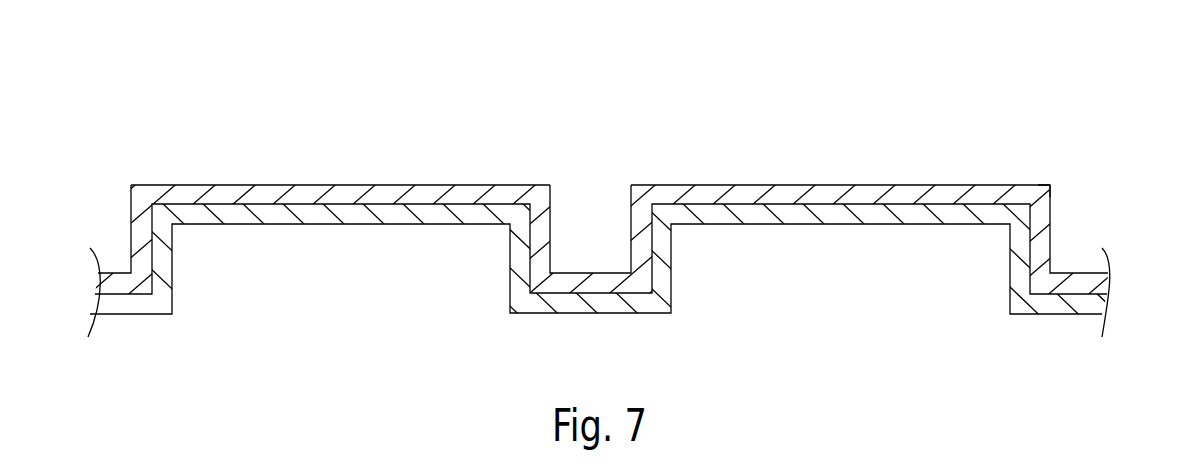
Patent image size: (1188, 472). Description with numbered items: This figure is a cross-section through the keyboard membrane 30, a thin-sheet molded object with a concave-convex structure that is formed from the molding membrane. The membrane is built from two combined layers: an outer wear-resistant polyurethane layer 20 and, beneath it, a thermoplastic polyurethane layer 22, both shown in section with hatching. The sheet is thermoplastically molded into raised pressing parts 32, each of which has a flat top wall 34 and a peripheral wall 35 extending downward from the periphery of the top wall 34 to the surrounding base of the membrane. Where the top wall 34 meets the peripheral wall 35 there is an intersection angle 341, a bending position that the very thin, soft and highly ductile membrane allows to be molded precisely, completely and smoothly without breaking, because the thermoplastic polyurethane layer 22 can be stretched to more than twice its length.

The wear-resistant polyurethane layer 20 is at (784, 192).
The thermoplastic polyurethane layer 22 is at (835, 217).
The keyboard membrane 30 is at (867, 160).
The pressing part 32 is at (175, 72).
The top wall 34 is at (233, 185).
The intersection angle 341 is at (1055, 182).
The peripheral wall 35 is at (130, 238).